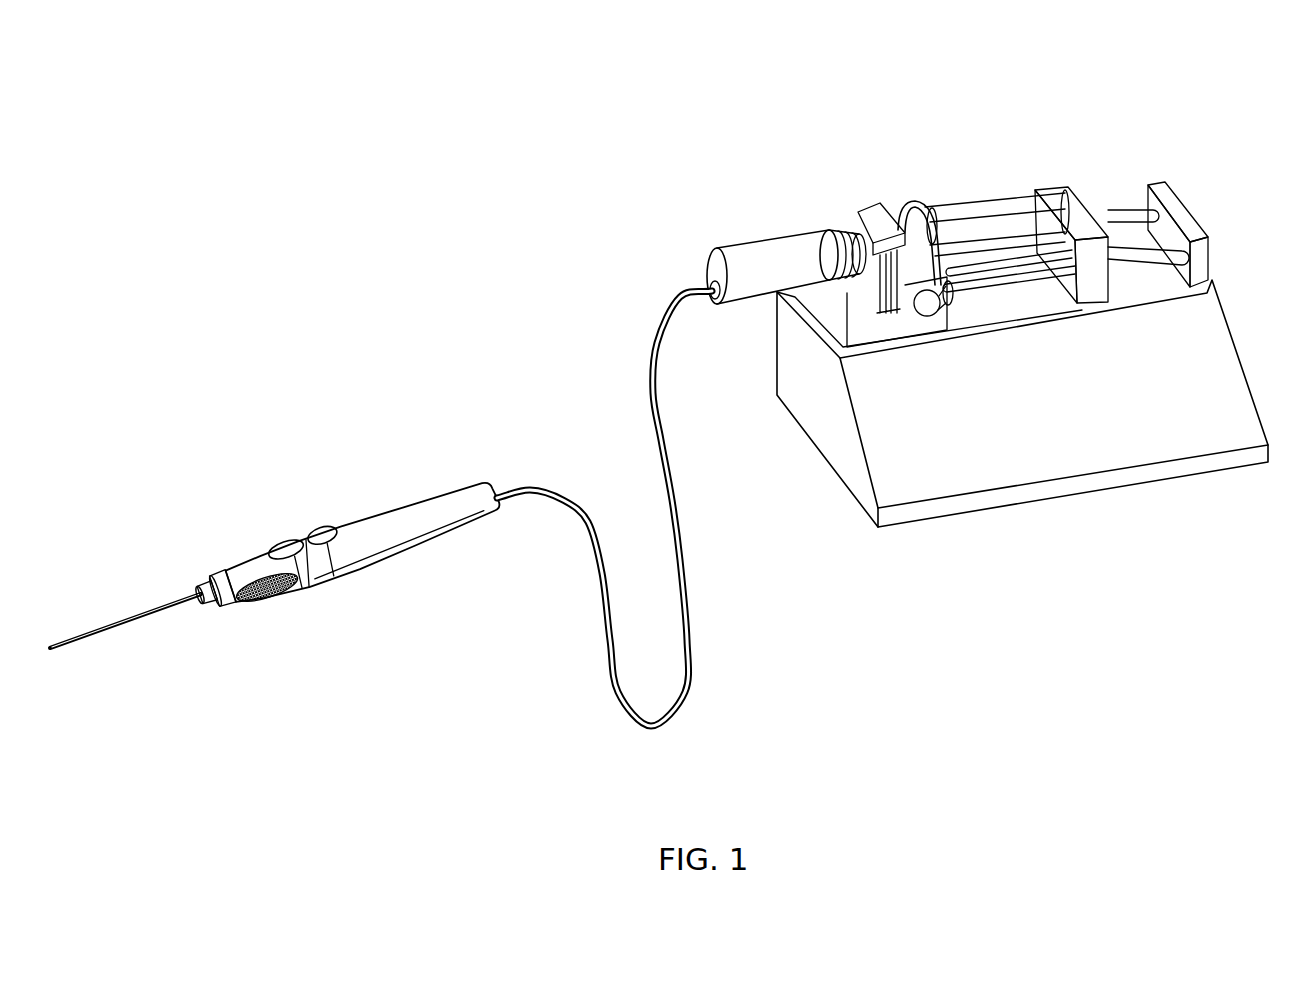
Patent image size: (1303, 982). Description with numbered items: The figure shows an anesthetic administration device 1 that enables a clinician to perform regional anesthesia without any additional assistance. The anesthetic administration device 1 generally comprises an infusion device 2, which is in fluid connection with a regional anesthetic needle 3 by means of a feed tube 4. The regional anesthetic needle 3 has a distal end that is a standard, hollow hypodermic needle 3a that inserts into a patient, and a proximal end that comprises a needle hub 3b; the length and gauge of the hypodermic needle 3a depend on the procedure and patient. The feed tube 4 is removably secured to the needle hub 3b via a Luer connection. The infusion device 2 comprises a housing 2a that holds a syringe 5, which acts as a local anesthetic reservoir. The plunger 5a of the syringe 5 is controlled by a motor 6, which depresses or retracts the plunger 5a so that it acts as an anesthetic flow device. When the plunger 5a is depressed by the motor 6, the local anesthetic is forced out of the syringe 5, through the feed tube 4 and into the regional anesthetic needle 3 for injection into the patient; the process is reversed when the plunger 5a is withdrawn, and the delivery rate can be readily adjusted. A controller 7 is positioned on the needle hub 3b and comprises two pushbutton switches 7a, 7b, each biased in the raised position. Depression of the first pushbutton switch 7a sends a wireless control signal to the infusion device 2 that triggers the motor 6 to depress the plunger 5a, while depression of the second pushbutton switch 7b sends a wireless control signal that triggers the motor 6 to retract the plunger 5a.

The anesthetic administration device 1 is at (1220, 60).
The infusion device 2 is at (1252, 541).
The housing 2a is at (1205, 368).
The regional anesthetic needle 3 is at (33, 548).
The hypodermic needle 3a is at (93, 637).
The needle hub 3b is at (375, 543).
The feed tube 4 is at (670, 730).
The syringe 5 is at (781, 234).
The plunger 5a is at (973, 203).
The motor 6 is at (1083, 237).
The controller 7 is at (258, 538).
The first pushbutton switch 7a is at (303, 587).
The second pushbutton switch 7b is at (317, 540).